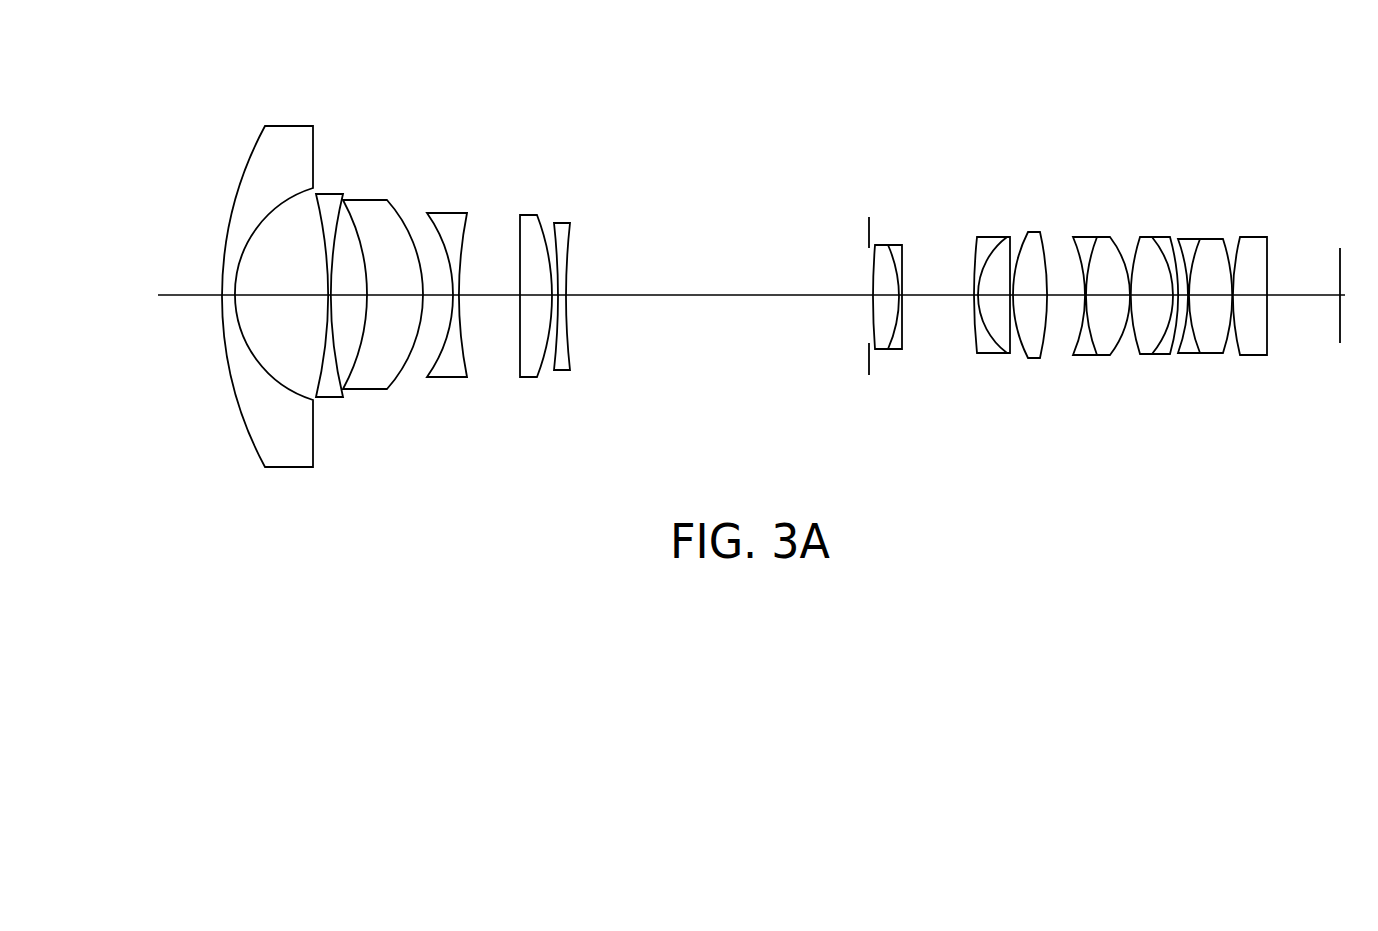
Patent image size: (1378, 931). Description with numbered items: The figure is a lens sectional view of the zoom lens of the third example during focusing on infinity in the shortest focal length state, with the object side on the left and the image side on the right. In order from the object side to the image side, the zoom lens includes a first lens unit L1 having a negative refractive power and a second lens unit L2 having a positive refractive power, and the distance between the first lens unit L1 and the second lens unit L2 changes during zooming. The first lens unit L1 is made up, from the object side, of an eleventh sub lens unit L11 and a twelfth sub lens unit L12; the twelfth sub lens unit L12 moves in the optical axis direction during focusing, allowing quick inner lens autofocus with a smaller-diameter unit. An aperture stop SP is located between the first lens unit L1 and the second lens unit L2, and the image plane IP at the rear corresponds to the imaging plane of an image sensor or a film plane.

The first lens unit L1 is at (222, 73).
The eleventh sub lens unit L11 is at (222, 125).
The twelfth sub lens unit L12 is at (594, 125).
The second lens unit L2 is at (875, 73).
The aperture stop SP is at (862, 222).
The image plane IP is at (1333, 243).